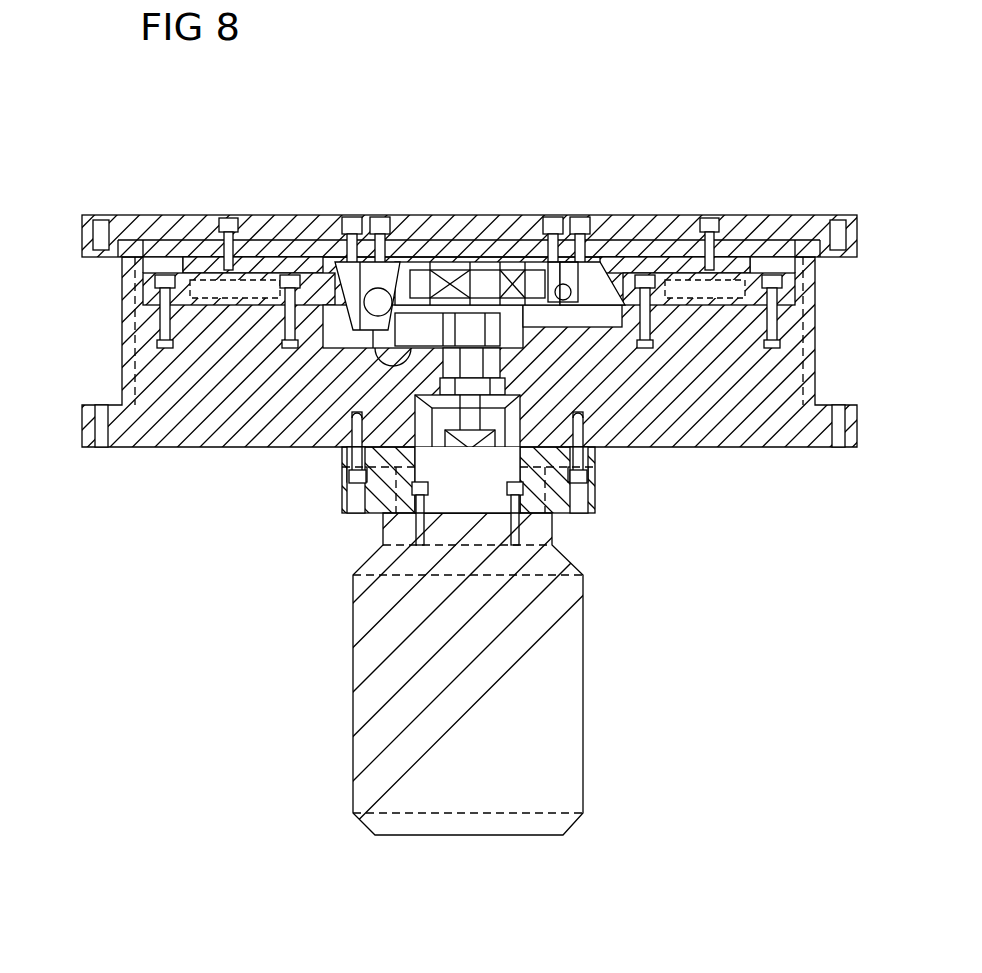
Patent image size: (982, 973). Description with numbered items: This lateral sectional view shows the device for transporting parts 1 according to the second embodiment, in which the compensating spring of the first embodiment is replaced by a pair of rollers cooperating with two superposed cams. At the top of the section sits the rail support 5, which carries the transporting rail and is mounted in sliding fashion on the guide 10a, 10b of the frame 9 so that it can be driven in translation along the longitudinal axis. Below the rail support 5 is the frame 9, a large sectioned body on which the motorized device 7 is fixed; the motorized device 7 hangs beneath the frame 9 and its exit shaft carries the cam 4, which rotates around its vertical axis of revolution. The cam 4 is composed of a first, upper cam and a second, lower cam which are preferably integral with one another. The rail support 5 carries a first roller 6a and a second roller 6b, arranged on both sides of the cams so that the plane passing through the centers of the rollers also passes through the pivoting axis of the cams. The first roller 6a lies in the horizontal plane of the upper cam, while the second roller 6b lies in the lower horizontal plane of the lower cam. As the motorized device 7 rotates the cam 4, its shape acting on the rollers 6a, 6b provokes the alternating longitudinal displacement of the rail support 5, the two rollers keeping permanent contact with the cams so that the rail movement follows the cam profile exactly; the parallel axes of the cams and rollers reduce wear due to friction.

The device for transporting parts 1 is at (226, 530).
The cam 4 is at (434, 262).
The rail support 5 is at (719, 200).
The first roller 6a is at (560, 276).
The second roller 6b is at (352, 300).
The motorized device 7 is at (596, 702).
The frame 9 is at (735, 430).
The guide 10a is at (791, 308).
The guide 10b is at (140, 280).